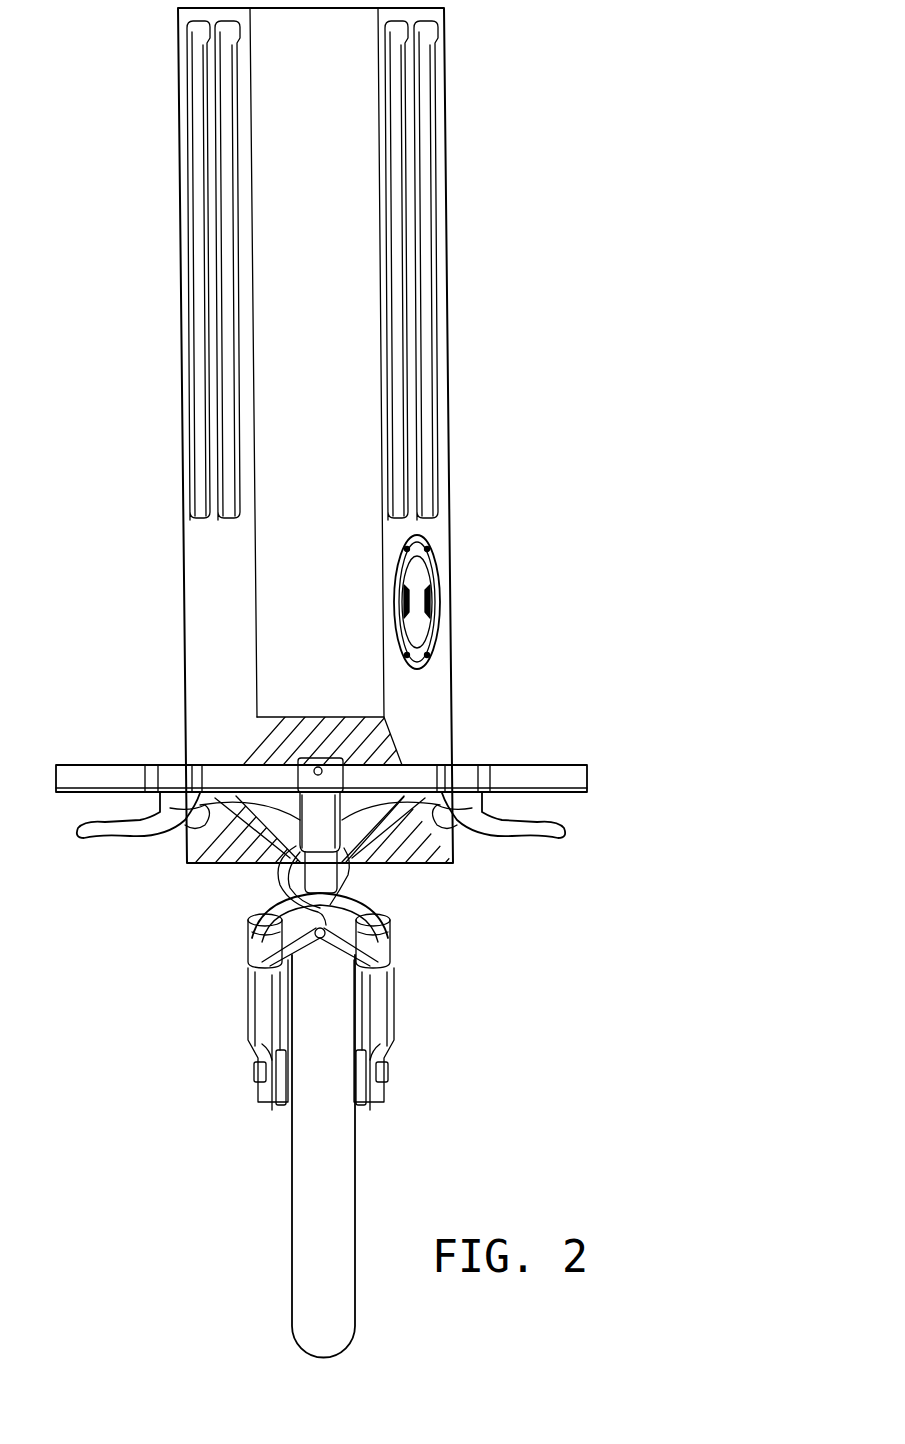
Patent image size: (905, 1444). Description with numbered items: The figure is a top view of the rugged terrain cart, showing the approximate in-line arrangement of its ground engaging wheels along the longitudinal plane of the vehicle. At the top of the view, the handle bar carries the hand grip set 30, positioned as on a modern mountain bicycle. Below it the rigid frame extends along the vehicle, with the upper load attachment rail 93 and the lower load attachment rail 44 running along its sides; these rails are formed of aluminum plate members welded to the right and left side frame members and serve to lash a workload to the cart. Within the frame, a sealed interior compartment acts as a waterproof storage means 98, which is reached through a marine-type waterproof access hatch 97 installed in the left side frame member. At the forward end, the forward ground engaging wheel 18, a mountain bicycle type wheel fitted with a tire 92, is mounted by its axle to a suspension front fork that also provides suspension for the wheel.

The lower load attachment rail 44 is at (429, 109).
The upper load attachment rail 93 is at (402, 243).
The waterproof access hatch 97 is at (428, 558).
The waterproof storage means 98 is at (420, 635).
The hand grip set 30 is at (125, 778).
The tire 92 is at (320, 1130).
The forward ground engaging wheel 18 is at (357, 1193).